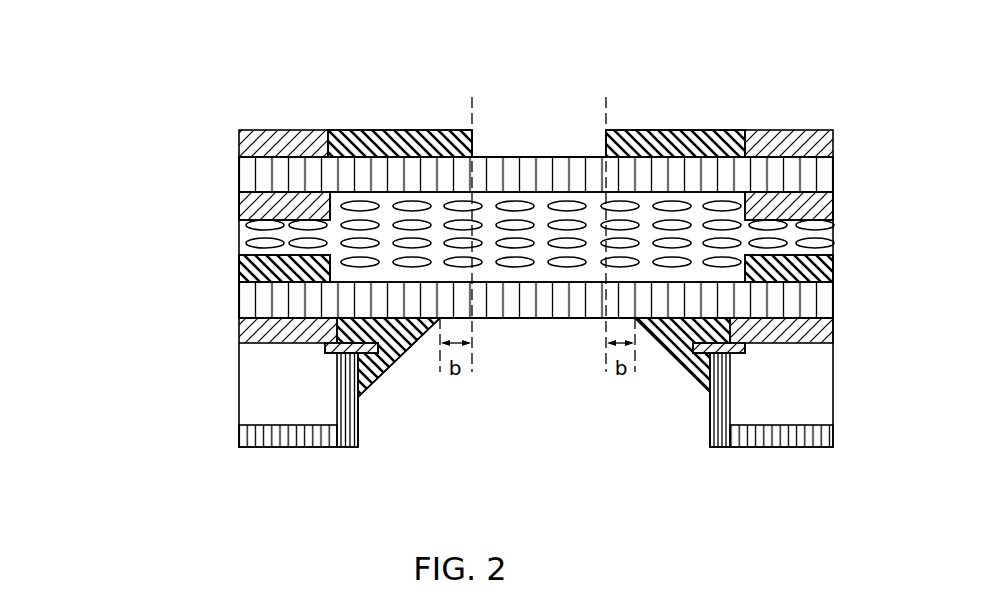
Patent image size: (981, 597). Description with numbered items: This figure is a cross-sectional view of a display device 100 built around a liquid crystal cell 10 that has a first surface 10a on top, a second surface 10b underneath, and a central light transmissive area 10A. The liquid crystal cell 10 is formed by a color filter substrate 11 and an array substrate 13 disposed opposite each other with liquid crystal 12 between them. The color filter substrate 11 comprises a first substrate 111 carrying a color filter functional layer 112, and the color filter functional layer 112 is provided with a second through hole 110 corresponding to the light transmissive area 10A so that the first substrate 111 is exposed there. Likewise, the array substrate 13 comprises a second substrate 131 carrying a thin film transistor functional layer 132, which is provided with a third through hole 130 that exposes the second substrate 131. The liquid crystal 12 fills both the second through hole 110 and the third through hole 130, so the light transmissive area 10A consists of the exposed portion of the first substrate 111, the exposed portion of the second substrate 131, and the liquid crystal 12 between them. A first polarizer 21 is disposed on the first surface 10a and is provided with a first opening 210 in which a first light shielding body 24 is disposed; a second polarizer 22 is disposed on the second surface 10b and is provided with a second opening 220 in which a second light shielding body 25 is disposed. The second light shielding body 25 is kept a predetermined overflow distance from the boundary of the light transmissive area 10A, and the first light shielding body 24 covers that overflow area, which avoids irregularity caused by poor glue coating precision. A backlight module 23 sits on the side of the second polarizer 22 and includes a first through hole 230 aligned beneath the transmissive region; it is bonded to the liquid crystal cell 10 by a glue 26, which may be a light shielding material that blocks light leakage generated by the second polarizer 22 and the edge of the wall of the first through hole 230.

The display device 100 is at (300, 87).
The liquid crystal cell 10 is at (58, 198).
The first surface 10a is at (262, 153).
The second surface 10b is at (258, 321).
The light transmissive area 10A is at (606, 156).
The color filter substrate 11 is at (110, 170).
The first substrate 111 is at (248, 178).
The color filter functional layer 112 is at (248, 208).
The second through hole 110 is at (336, 203).
The liquid crystal 12 is at (248, 243).
The array substrate 13 is at (110, 270).
The second substrate 131 is at (248, 302).
The thin film transistor functional layer 132 is at (248, 270).
The third through hole 130 is at (336, 265).
The first polarizer 21 is at (790, 143).
The first opening 210 is at (745, 140).
The first light shielding body 24 is at (702, 148).
The second polarizer 22 is at (790, 322).
The second opening 220 is at (673, 340).
The second light shielding body 25 is at (718, 330).
The glue 26 is at (703, 352).
The backlight module 23 is at (790, 393).
The first through hole 230 is at (520, 410).